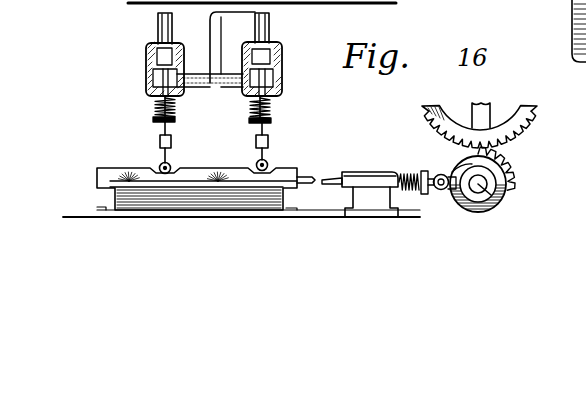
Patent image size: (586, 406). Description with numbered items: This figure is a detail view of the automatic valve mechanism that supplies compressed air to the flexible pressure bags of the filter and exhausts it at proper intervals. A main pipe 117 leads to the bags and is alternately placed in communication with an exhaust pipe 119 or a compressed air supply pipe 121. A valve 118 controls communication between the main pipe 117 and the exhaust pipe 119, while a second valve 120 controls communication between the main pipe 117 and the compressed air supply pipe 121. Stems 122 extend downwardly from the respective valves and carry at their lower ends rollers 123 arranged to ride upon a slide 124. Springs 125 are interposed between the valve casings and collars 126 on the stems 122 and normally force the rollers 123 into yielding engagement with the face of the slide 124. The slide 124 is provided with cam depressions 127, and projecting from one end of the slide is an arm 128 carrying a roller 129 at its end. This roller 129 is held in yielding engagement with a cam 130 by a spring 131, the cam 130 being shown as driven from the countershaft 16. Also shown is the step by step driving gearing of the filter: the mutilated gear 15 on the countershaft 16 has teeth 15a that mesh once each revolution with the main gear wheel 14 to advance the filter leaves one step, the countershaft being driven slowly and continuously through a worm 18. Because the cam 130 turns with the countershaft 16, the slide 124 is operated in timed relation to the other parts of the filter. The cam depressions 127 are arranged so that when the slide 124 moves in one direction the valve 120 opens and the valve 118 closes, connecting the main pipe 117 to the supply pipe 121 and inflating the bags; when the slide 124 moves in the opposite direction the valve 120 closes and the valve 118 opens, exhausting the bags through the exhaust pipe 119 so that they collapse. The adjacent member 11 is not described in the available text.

The drum 11 is at (570, 10).
The gear wheel 14 is at (540, 123).
The mutilated gear 15 is at (503, 192).
The teeth 15a is at (514, 160).
The countershaft 16 is at (500, 203).
The worm 18 is at (128, 1).
The main pipe 117 is at (268, 33).
The valve 118 is at (282, 76).
The exhaust pipe 119 is at (271, 44).
The second valve 120 is at (146, 80).
The compressed air supply pipe 121 is at (157, 29).
The stems 122 is at (256, 135).
The rollers 123 is at (159, 170).
The slide 124 is at (118, 178).
The springs 125 is at (155, 106).
The collars 126 is at (250, 121).
The cam depressions 127 is at (248, 175).
The arm 128 is at (330, 172).
The roller 129 is at (440, 174).
The cam 130 is at (484, 211).
The spring 131 is at (420, 213).